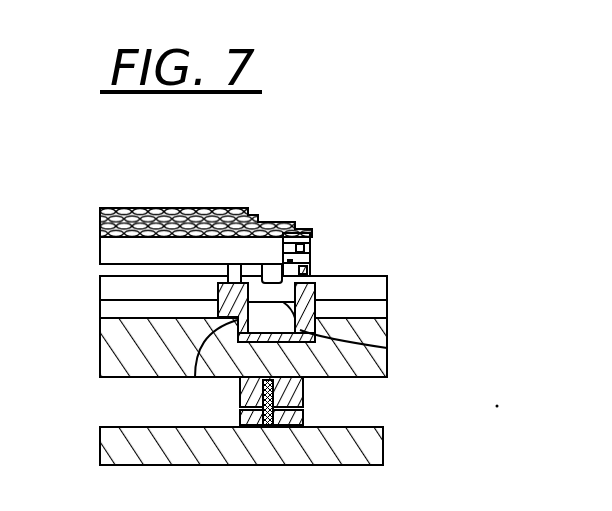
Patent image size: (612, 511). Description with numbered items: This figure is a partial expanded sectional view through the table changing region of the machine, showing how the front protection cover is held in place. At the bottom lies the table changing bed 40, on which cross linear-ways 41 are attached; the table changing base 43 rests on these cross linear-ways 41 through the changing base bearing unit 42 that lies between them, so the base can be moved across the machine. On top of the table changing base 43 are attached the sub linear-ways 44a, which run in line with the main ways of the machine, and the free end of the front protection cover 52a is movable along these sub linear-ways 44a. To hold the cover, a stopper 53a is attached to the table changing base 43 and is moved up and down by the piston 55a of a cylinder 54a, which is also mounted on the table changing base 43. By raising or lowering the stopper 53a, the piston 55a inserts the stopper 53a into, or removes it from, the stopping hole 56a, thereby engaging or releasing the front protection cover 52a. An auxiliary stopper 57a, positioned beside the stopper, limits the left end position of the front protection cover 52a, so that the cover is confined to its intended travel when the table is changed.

The table changing bed 40 is at (385, 445).
The cross linear-ways 41 is at (270, 425).
The changing base bearing unit 42 is at (305, 398).
The table changing base 43 is at (388, 322).
The sub linear-ways 44a is at (390, 279).
The front protection cover 52a is at (124, 208).
The stopper 53a is at (310, 246).
The cylinder 54a is at (197, 377).
The piston 55a is at (387, 347).
The stopping hole 56a is at (283, 251).
The auxiliary stopper 57a is at (231, 256).